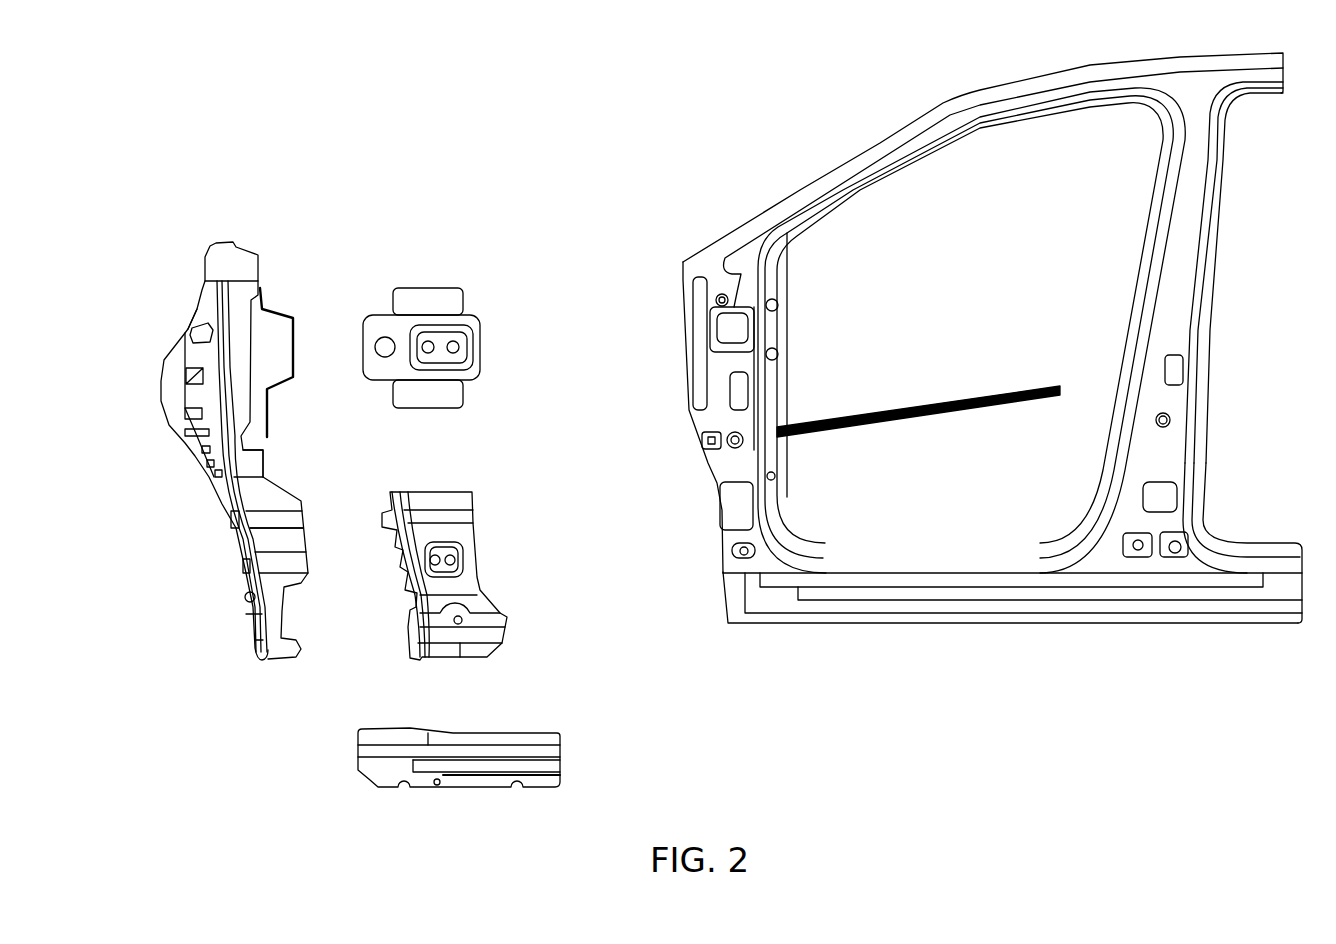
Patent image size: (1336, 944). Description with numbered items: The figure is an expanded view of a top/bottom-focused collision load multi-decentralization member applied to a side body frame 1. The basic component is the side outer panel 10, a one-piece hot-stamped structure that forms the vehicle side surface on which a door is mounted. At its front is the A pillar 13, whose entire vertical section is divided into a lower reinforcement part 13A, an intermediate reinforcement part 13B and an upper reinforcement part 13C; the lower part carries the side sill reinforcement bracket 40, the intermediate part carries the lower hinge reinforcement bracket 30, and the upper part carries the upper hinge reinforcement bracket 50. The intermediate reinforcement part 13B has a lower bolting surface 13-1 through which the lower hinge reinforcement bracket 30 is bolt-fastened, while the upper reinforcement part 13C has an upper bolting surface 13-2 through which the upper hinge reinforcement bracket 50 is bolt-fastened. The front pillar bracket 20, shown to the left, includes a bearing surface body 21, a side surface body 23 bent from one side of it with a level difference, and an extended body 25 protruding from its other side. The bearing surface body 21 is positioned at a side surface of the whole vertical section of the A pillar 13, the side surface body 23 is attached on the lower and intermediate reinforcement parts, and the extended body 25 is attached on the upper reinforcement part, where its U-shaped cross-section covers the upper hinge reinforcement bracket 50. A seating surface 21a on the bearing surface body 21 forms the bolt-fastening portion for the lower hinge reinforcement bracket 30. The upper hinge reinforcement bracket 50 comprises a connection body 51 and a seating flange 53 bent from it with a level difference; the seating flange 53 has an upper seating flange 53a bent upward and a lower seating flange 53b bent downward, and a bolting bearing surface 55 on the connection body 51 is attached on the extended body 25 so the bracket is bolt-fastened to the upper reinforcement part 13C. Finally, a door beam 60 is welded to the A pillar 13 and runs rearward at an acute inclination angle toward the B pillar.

The side body frame 1 is at (162, 76).
The side outer panel 10 is at (833, 172).
The A pillar 13 is at (780, 383).
The lower bolting surface 13-1 is at (747, 498).
The upper bolting surface 13-2 is at (738, 328).
The lower reinforcement part 13A is at (720, 575).
The intermediate reinforcement part 13B is at (692, 440).
The upper reinforcement part 13C is at (680, 278).
The front pillar bracket 20 is at (190, 230).
The bearing surface body 21 is at (263, 492).
The seating surface 21a is at (275, 540).
The side surface body 23 is at (195, 360).
The extended body 25 is at (270, 300).
The lower hinge reinforcement bracket 30 is at (433, 617).
The side sill reinforcement bracket 40 is at (497, 770).
The upper hinge reinforcement bracket 50 is at (467, 253).
The connection body 51 is at (373, 367).
The seating flange 53 is at (557, 302).
The upper seating flange 53a is at (450, 303).
The lower seating flange 53b is at (450, 395).
The bolting bearing surface 55 is at (427, 353).
The door beam 60 is at (973, 398).